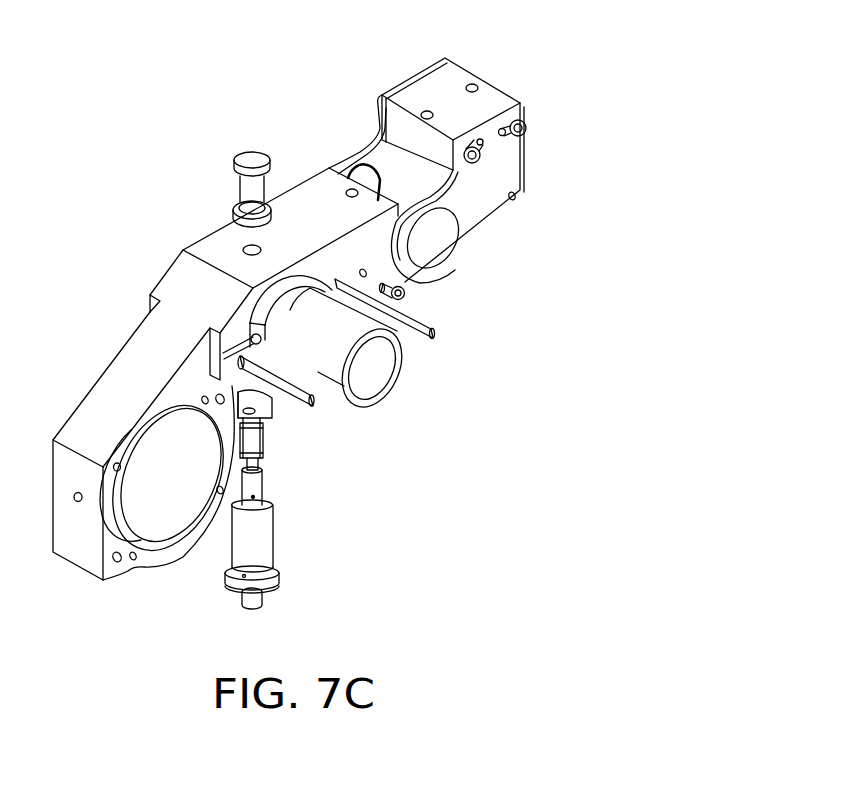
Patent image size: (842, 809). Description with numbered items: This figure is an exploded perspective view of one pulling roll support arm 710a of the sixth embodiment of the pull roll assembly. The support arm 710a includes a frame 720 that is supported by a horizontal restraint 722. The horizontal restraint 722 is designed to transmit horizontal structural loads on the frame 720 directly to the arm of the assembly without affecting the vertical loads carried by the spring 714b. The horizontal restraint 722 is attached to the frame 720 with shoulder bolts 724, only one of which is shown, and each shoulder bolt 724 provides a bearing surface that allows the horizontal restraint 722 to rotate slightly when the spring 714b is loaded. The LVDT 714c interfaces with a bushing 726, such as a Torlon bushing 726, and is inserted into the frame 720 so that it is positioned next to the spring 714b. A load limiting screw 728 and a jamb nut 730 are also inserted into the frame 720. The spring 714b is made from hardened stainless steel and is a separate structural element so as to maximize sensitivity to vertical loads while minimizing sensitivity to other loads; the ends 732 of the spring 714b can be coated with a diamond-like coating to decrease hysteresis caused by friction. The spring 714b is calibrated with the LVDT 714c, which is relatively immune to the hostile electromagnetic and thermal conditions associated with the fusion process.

The pulling roll support arm 710a is at (637, 29).
The frame 720 is at (178, 287).
The horizontal restraint 722 is at (455, 82).
The shoulder bolt 724 is at (406, 298).
The bushing 726 is at (265, 443).
The load limiting screw 728 is at (238, 181).
The jamb nut 730 is at (232, 213).
The ends of the spring 732 is at (426, 340).
The spring 714b is at (385, 400).
The LVDT 714c is at (275, 543).